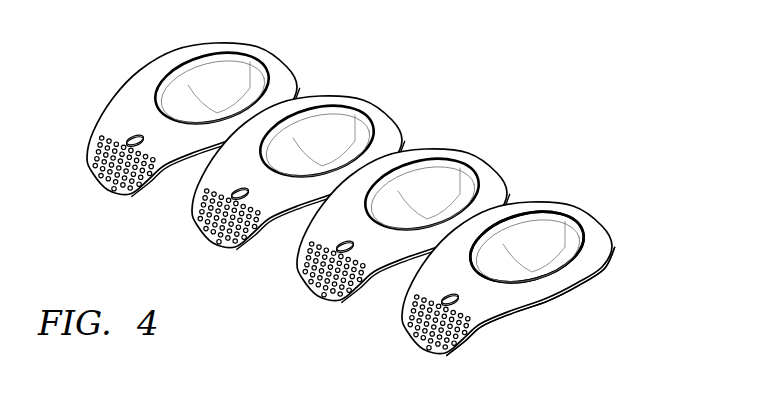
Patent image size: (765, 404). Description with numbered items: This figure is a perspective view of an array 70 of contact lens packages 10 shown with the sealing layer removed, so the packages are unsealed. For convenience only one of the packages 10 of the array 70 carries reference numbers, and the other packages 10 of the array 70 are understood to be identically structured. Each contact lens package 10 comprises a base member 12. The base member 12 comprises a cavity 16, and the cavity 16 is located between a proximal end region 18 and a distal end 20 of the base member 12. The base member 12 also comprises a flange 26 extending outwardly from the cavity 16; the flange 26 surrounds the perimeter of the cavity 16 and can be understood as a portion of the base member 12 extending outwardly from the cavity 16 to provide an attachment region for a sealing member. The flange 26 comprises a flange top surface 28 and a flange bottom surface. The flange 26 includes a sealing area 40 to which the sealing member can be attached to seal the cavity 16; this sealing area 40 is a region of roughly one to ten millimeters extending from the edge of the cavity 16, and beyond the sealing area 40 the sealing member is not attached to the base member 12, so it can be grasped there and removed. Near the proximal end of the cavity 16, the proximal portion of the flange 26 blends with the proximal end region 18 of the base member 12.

The contact lens package 10 is at (254, 50).
The array 70 is at (351, 194).
The base member 12 is at (507, 278).
The cavity 16 is at (526, 247).
The proximal end region 18 is at (439, 321).
The distal end 20 is at (526, 247).
The flange 26 is at (531, 301).
The flange top surface 28 is at (531, 301).
The sealing area 40 is at (527, 250).